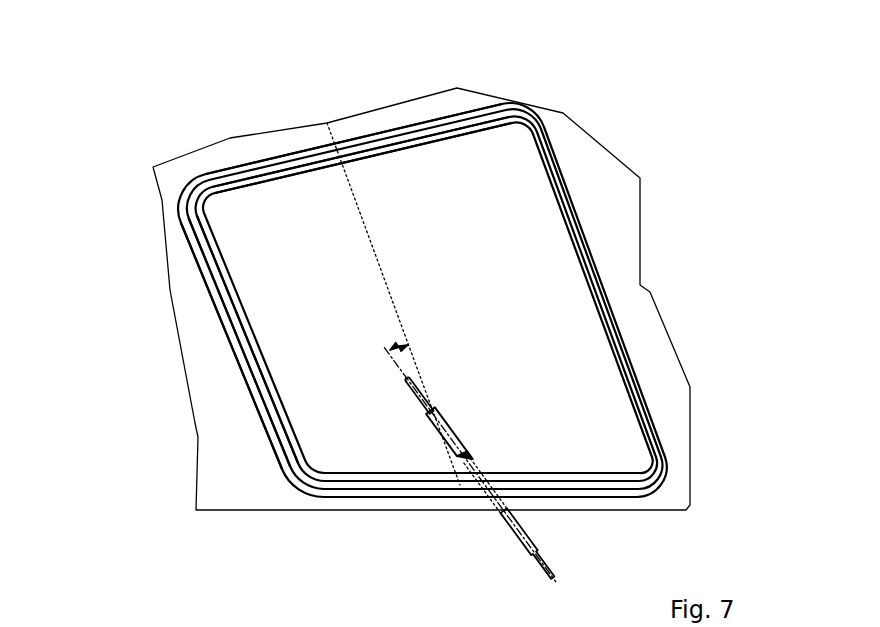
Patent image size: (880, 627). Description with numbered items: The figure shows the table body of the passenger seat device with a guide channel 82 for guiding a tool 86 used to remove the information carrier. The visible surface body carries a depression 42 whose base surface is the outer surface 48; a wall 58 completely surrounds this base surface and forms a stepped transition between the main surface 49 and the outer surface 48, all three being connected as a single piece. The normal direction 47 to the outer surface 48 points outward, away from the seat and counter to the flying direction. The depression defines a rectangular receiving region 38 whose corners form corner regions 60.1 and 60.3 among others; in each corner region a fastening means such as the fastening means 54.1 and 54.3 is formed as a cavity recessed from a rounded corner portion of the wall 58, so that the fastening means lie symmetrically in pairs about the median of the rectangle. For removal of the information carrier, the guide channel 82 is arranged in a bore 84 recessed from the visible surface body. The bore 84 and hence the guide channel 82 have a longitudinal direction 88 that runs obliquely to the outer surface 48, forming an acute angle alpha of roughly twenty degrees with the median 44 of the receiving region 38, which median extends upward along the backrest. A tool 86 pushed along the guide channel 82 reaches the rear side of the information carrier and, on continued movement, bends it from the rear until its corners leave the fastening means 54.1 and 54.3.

The receiving region 38 is at (560, 137).
The depression 42 is at (297, 340).
The median 44 is at (373, 237).
The acute angle alpha is at (394, 337).
The normal direction 47 is at (316, 305).
The outer surface 48 is at (308, 376).
The main surface 49 is at (184, 283).
The fastening means 54.1 is at (193, 207).
The fastening means 54.3 is at (302, 482).
The wall 58 is at (213, 271).
The corner region 60.1 is at (222, 217).
The corner region 60.3 is at (318, 466).
The guide channel 82 is at (497, 517).
The bore 84 is at (462, 470).
The tool 86 is at (418, 402).
The longitudinal direction 88 is at (405, 377).